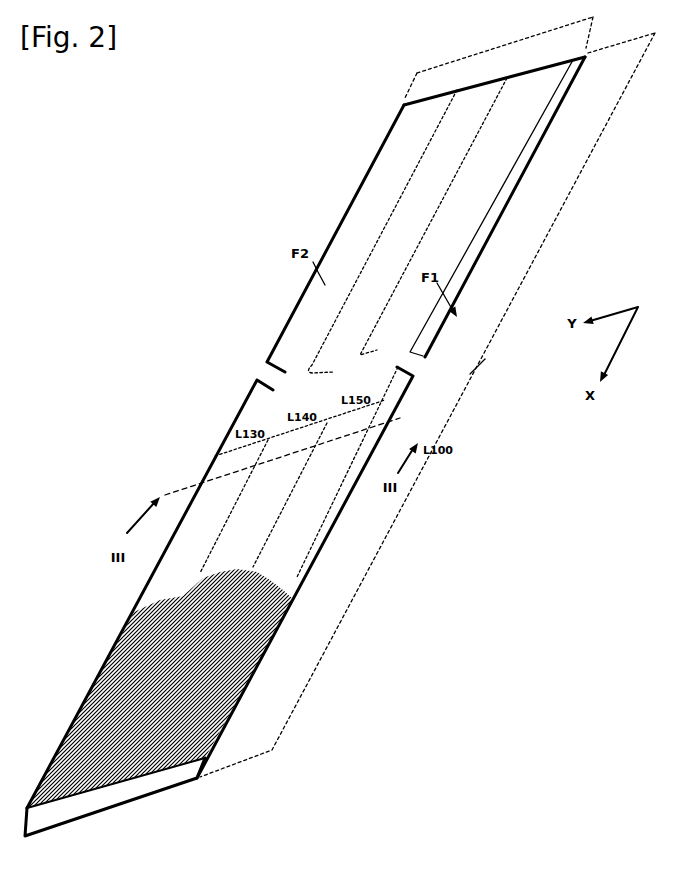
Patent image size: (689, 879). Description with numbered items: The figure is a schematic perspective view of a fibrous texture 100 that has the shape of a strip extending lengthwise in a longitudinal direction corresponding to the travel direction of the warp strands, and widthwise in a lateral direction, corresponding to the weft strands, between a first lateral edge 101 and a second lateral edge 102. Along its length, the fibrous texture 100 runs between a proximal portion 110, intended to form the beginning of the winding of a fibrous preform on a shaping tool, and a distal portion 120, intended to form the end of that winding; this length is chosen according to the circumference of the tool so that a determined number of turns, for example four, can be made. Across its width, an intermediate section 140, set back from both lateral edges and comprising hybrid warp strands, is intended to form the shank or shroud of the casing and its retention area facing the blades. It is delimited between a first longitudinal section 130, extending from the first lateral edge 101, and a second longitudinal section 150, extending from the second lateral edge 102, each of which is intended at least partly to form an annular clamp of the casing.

The fibrous texture 100 is at (95, 455).
The first lateral edge 101 is at (161, 678).
The second lateral edge 102 is at (140, 586).
The proximal portion 110 is at (187, 795).
The distal portion 120 is at (401, 107).
The first longitudinal section 130 is at (168, 561).
The intermediate section 140 is at (230, 543).
The second longitudinal section 150 is at (286, 526).